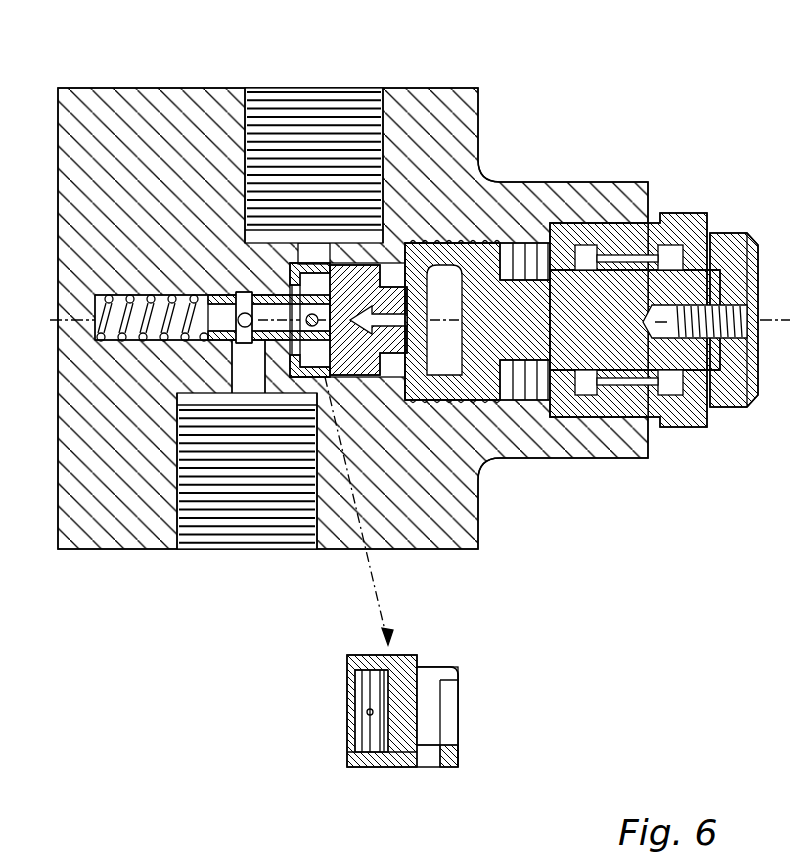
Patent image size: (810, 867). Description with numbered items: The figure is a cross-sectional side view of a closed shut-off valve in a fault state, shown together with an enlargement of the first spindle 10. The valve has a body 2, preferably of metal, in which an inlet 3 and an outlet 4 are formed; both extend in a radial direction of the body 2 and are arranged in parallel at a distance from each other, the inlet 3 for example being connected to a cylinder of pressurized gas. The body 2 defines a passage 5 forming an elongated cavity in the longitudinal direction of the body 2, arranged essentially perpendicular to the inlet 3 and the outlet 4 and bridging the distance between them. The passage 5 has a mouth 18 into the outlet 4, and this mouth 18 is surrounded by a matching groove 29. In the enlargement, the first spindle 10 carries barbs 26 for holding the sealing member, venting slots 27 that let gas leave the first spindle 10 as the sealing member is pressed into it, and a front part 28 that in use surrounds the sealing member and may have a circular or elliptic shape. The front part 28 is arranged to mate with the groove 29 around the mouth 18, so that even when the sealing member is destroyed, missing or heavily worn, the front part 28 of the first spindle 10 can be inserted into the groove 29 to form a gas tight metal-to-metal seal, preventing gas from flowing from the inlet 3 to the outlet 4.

The body 2 is at (150, 103).
The inlet 3 is at (205, 520).
The outlet 4 is at (322, 97).
The passage 5 is at (153, 343).
The mouth 18 is at (328, 377).
The groove 29 is at (292, 270).
The first spindle 10 is at (348, 728).
The barbs 26 is at (352, 768).
The venting slots 27 is at (365, 712).
The front part 28 is at (348, 657).